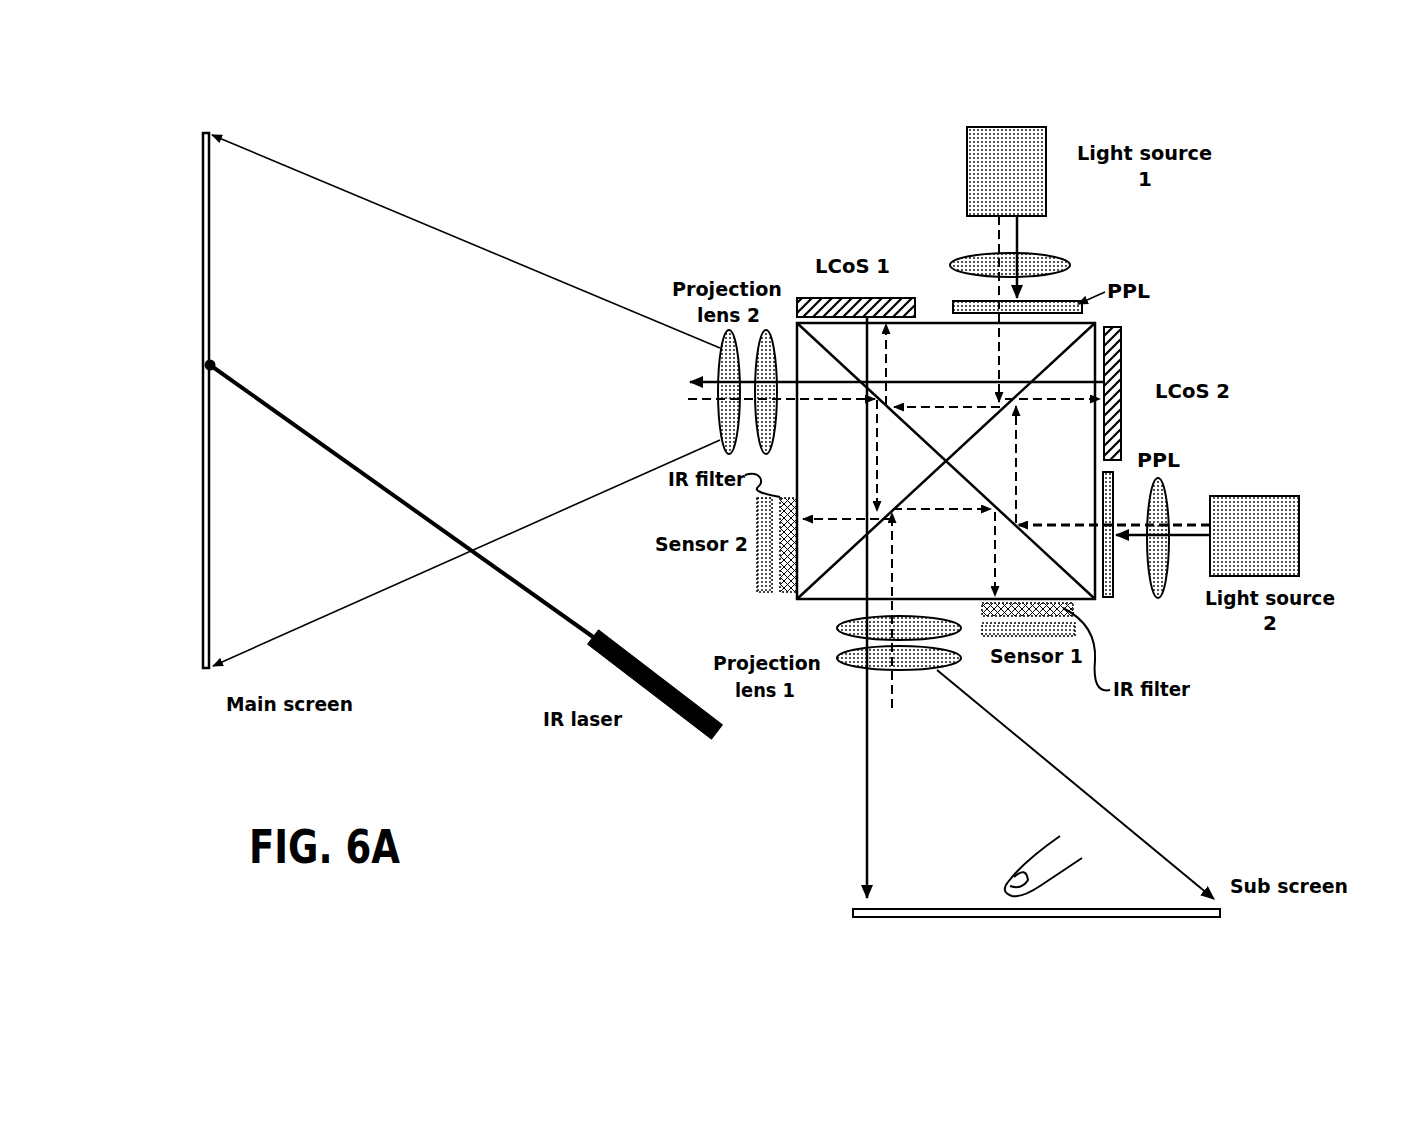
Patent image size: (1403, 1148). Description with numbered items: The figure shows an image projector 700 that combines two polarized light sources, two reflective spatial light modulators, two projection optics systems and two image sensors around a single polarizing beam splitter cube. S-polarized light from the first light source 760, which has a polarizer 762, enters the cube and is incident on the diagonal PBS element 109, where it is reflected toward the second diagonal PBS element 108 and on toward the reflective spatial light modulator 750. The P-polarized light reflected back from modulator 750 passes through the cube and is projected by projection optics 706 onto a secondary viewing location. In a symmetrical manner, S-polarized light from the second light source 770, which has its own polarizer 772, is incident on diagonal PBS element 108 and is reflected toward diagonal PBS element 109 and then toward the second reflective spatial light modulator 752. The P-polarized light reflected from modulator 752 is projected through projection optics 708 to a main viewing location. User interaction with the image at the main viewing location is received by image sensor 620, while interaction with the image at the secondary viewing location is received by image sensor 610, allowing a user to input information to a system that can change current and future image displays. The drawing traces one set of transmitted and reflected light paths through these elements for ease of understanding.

The image projector 700 is at (1277, 240).
The light source 760 is at (970, 187).
The polarizer 762 is at (1068, 300).
The reflective spatial light modulator 750 is at (890, 297).
The second reflective spatial light modulator 752 is at (1121, 347).
The light source 770 is at (1262, 508).
The polarizer 772 is at (1116, 490).
The projection optics 708 is at (694, 417).
The projection optics 706 is at (838, 687).
The image sensor 620 is at (740, 569).
The image sensor 610 is at (1050, 671).
The diagonal PBS element 109 is at (828, 588).
The second diagonal PBS element 108 is at (1068, 582).